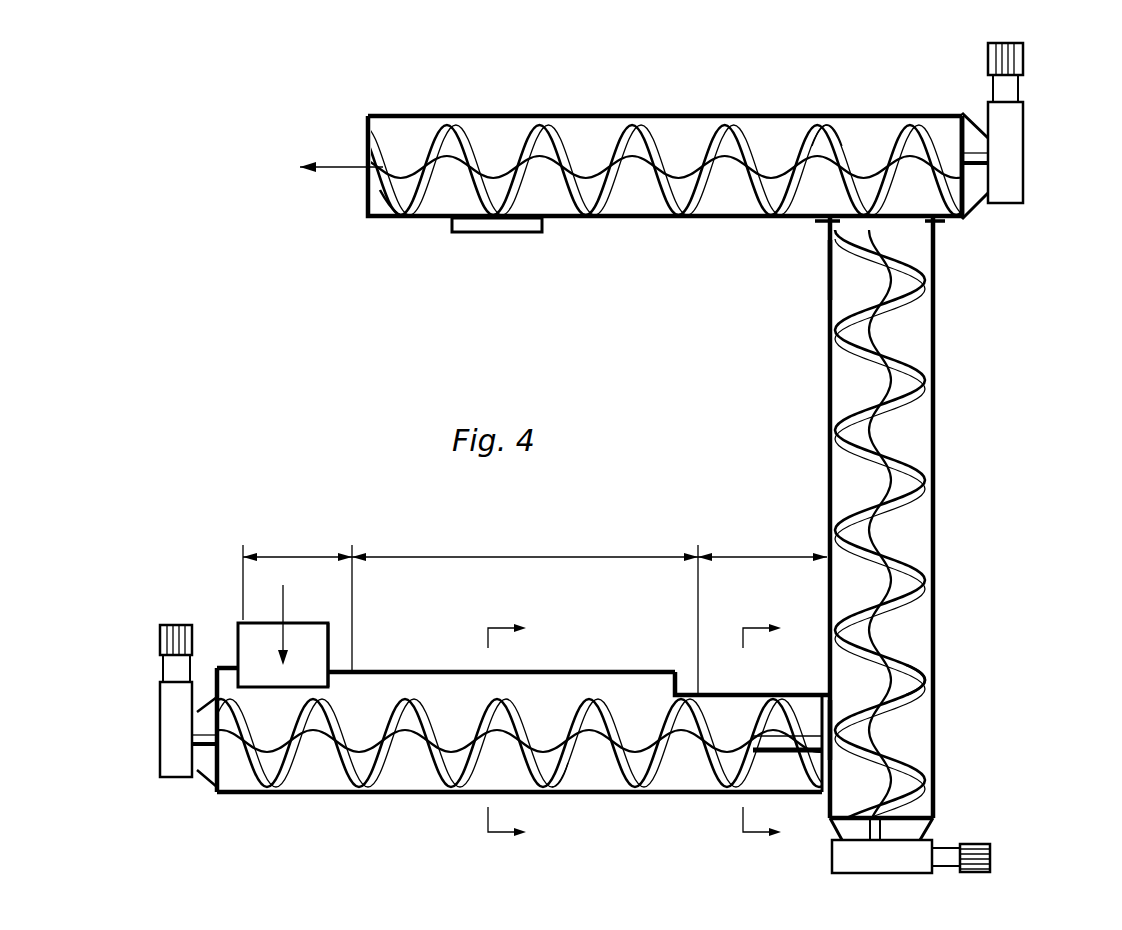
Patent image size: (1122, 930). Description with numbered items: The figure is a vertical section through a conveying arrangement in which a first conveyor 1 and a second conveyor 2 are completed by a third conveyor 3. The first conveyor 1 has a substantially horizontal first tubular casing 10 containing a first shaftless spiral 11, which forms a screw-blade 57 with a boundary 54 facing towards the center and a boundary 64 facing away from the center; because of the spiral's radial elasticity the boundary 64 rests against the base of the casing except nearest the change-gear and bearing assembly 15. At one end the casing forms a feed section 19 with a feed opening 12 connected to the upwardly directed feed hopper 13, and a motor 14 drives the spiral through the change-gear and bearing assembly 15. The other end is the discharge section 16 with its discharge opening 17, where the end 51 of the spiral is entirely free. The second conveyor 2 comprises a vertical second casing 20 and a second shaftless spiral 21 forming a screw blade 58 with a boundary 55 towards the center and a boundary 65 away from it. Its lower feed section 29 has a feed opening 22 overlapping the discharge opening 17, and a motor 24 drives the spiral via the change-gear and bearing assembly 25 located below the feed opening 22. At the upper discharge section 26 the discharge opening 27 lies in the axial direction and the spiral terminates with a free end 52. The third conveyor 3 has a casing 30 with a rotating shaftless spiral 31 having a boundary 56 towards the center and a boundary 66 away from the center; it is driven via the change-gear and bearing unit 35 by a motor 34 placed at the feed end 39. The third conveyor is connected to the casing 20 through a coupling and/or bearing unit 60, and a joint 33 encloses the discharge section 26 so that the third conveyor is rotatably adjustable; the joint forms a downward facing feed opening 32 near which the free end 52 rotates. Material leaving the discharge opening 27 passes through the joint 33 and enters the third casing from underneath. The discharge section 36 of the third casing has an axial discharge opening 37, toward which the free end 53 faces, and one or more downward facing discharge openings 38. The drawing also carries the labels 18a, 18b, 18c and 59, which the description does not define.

The first conveyor 1 is at (575, 657).
The second conveyor 2 is at (950, 470).
The third conveyor 3 is at (560, 110).
The first tubular casing 10 is at (432, 667).
The first shaftless spiral 11 is at (635, 763).
The feed opening 12 is at (330, 648).
The feed hopper 13 is at (255, 637).
The motor 14 is at (160, 638).
The change-gear and bearing assembly 15 is at (172, 727).
The discharge section 16 is at (760, 727).
The discharge opening 17 is at (830, 725).
The feed section 18a is at (297, 599).
The conveying section 18b is at (525, 610).
The transfer section 18c is at (762, 544).
The feed section 19 is at (300, 775).
The second casing 20 is at (930, 570).
The second shaftless spiral 21 is at (910, 400).
The feed opening 22 is at (805, 727).
The motor 24 is at (973, 857).
The change-gear and bearing assembly 25 is at (897, 858).
The discharge section 26 is at (930, 260).
The discharge opening 27 is at (853, 223).
The feed section 29 is at (915, 793).
The casing 30 is at (595, 220).
The shaftless spiral 31 is at (683, 220).
The feed opening 32 is at (913, 198).
The joint 33 is at (823, 275).
The motor 34 is at (1023, 60).
The change-gear and bearing unit 35 is at (1017, 133).
The discharge section 36 is at (473, 126).
The discharge opening 37 is at (373, 178).
The discharge opening 38 is at (502, 217).
The feed end 39 is at (937, 128).
The free end 51 is at (805, 791).
The free end 52 is at (917, 238).
The free end 53 is at (402, 194).
The boundary facing towards the center 54 is at (530, 755).
The boundary facing towards the center 55 is at (883, 330).
The boundary facing towards the center 56 is at (705, 138).
The screw-blade 57 is at (455, 775).
The screw blade 58 is at (905, 680).
The screw flight 59 is at (822, 137).
The coupling and/or bearing unit 60 is at (815, 222).
The boundary facing away from the center 64 is at (563, 777).
The boundary facing away from the center 65 is at (935, 540).
The boundary facing away from the center 66 is at (703, 126).